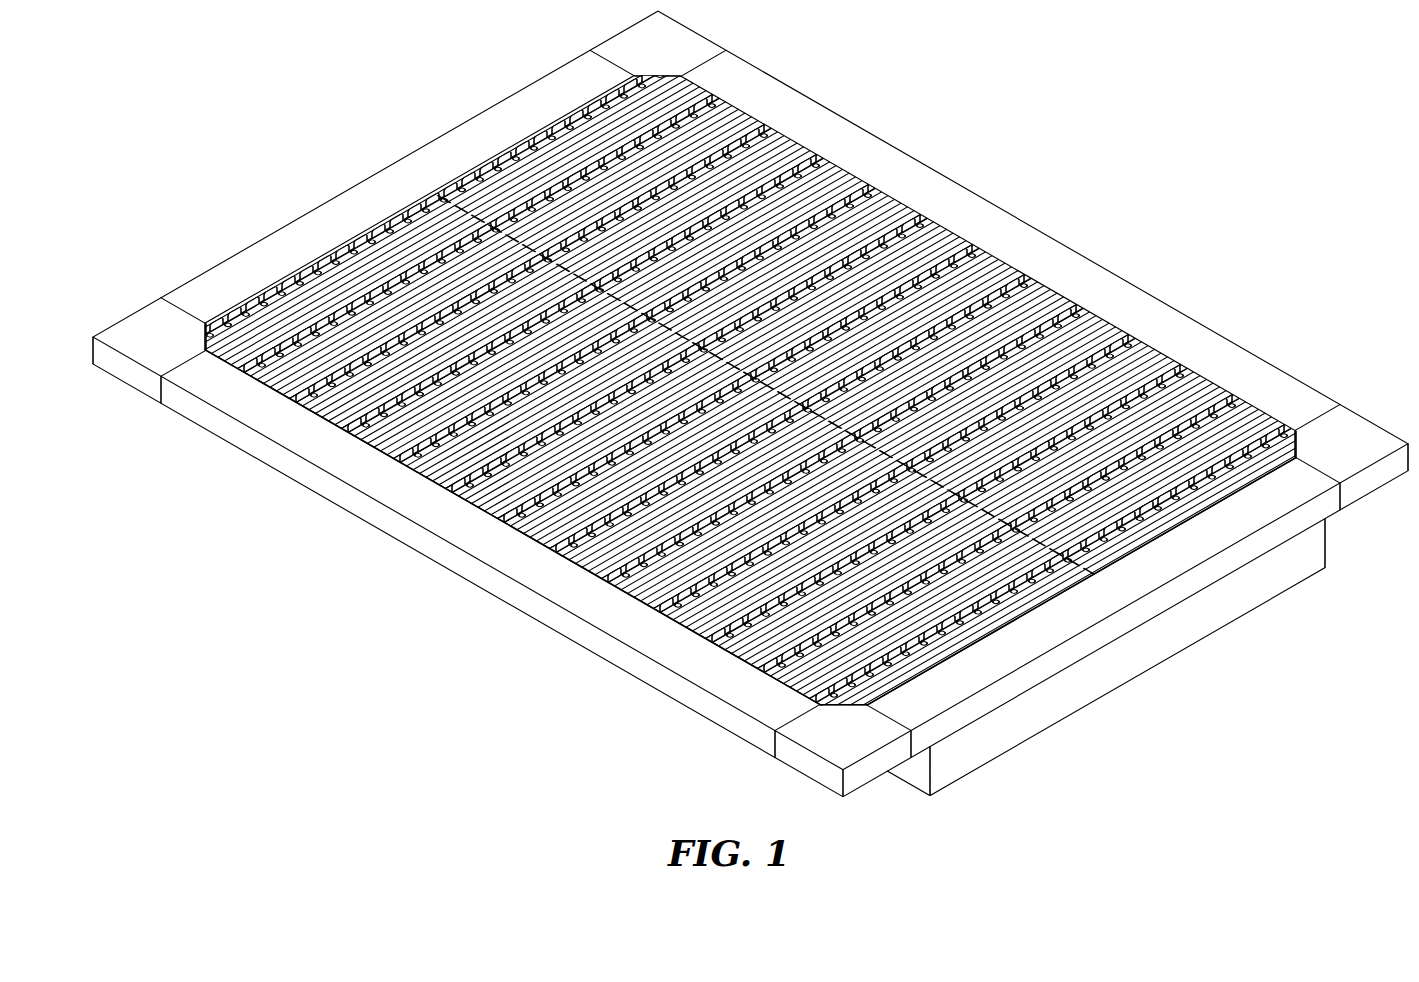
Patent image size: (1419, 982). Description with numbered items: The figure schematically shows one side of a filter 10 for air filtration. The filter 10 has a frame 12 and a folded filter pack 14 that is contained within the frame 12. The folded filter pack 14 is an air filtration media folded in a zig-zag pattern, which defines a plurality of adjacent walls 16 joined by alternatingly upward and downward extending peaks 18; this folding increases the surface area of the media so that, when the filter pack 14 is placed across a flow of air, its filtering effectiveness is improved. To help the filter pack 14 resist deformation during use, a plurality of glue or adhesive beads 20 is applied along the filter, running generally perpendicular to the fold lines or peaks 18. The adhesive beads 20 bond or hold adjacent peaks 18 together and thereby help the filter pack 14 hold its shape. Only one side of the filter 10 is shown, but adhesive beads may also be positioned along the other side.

The filter 10 is at (744, 413).
The frame 12 is at (744, 416).
The folded filter pack 14 is at (843, 704).
The adjacent walls 16 is at (750, 390).
The peaks 18 is at (774, 389).
The adhesive beads 20 is at (513, 527).